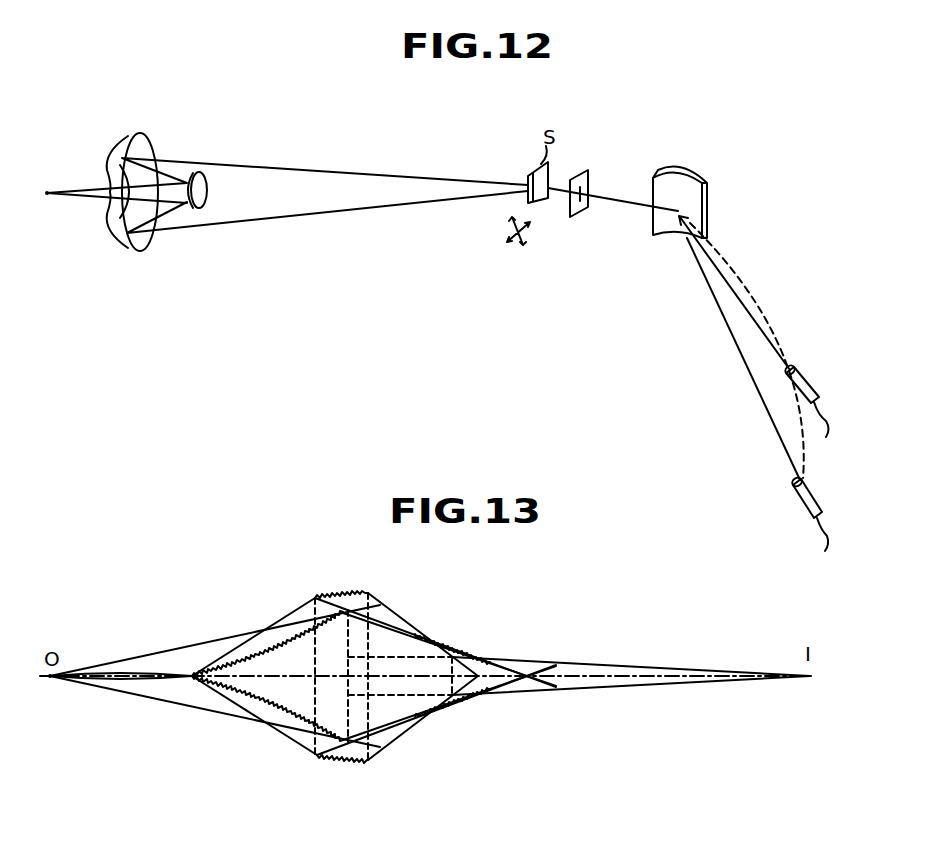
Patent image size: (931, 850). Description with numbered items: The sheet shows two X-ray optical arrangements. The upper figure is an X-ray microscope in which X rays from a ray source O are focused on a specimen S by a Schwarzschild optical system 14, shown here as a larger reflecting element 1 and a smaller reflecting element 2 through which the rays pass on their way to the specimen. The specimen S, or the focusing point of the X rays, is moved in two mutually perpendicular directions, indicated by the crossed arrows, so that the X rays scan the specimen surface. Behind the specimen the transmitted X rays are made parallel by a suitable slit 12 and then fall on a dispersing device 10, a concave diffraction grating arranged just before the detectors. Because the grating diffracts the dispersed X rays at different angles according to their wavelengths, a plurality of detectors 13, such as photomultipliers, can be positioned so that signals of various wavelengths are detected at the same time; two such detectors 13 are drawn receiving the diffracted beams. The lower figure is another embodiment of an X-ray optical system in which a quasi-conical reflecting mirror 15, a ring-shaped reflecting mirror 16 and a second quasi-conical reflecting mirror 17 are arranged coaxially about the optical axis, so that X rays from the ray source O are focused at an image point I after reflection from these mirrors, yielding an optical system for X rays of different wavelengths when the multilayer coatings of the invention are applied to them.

In FIG. 12, the objective lens 1 is at (144, 139).
In FIG. 12, the lens 2 is at (206, 195).
In FIG. 12, the Schwarzschild optical system 14 is at (284, 227).
In FIG. 12, the dispersing device 10 is at (693, 174).
In FIG. 12, the slit 12 is at (583, 171).
In FIG. 12, the detectors 13 is at (818, 387).
In FIG. 13, the quasi-conical reflecting mirror 15 is at (267, 706).
In FIG. 13, the ring-shaped reflecting mirror 16 is at (347, 763).
In FIG. 13, the quasi-conical reflecting mirror 17 is at (487, 694).